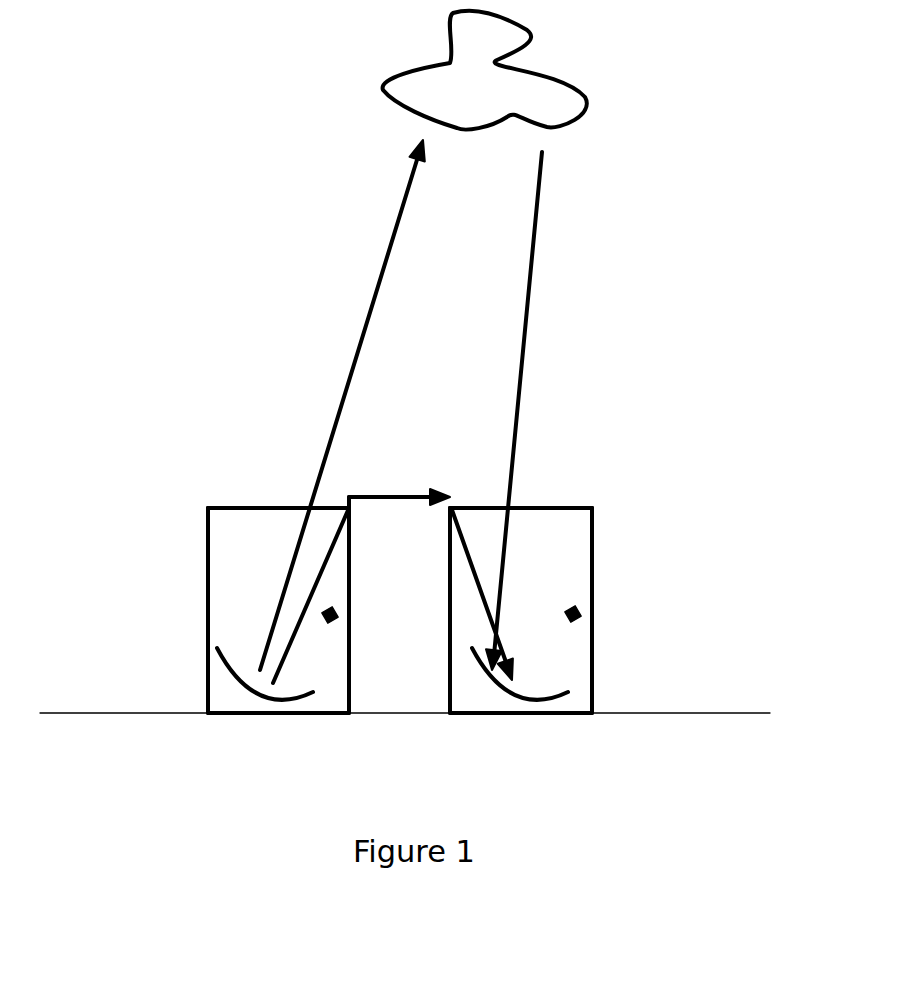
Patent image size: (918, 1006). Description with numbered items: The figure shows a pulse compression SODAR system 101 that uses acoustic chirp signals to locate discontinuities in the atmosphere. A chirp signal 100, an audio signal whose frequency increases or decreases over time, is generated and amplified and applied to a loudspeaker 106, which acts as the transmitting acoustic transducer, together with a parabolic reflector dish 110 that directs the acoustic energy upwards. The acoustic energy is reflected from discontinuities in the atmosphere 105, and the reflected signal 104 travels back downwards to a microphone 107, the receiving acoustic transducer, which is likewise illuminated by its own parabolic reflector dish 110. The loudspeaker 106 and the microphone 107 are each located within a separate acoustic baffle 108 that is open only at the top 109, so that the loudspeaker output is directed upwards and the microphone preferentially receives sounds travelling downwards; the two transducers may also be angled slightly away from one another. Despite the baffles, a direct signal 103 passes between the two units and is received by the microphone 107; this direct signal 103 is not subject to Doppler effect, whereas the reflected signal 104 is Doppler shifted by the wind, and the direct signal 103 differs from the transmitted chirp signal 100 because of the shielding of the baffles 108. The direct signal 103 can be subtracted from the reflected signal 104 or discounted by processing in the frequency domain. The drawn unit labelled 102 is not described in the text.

The chirp signal 100 is at (360, 317).
The pulse compression SODAR system 101 is at (210, 193).
The second optical unit 102 is at (595, 636).
The direct signal 103 is at (445, 490).
The reflected signal 104 is at (543, 257).
The discontinuities in the atmosphere 105 is at (575, 50).
The loudspeaker 106 is at (338, 625).
The microphone 107 is at (573, 625).
The acoustic baffle 108 is at (225, 598).
The top 109 is at (282, 505).
The parabolic reflector dish 110 is at (232, 680).